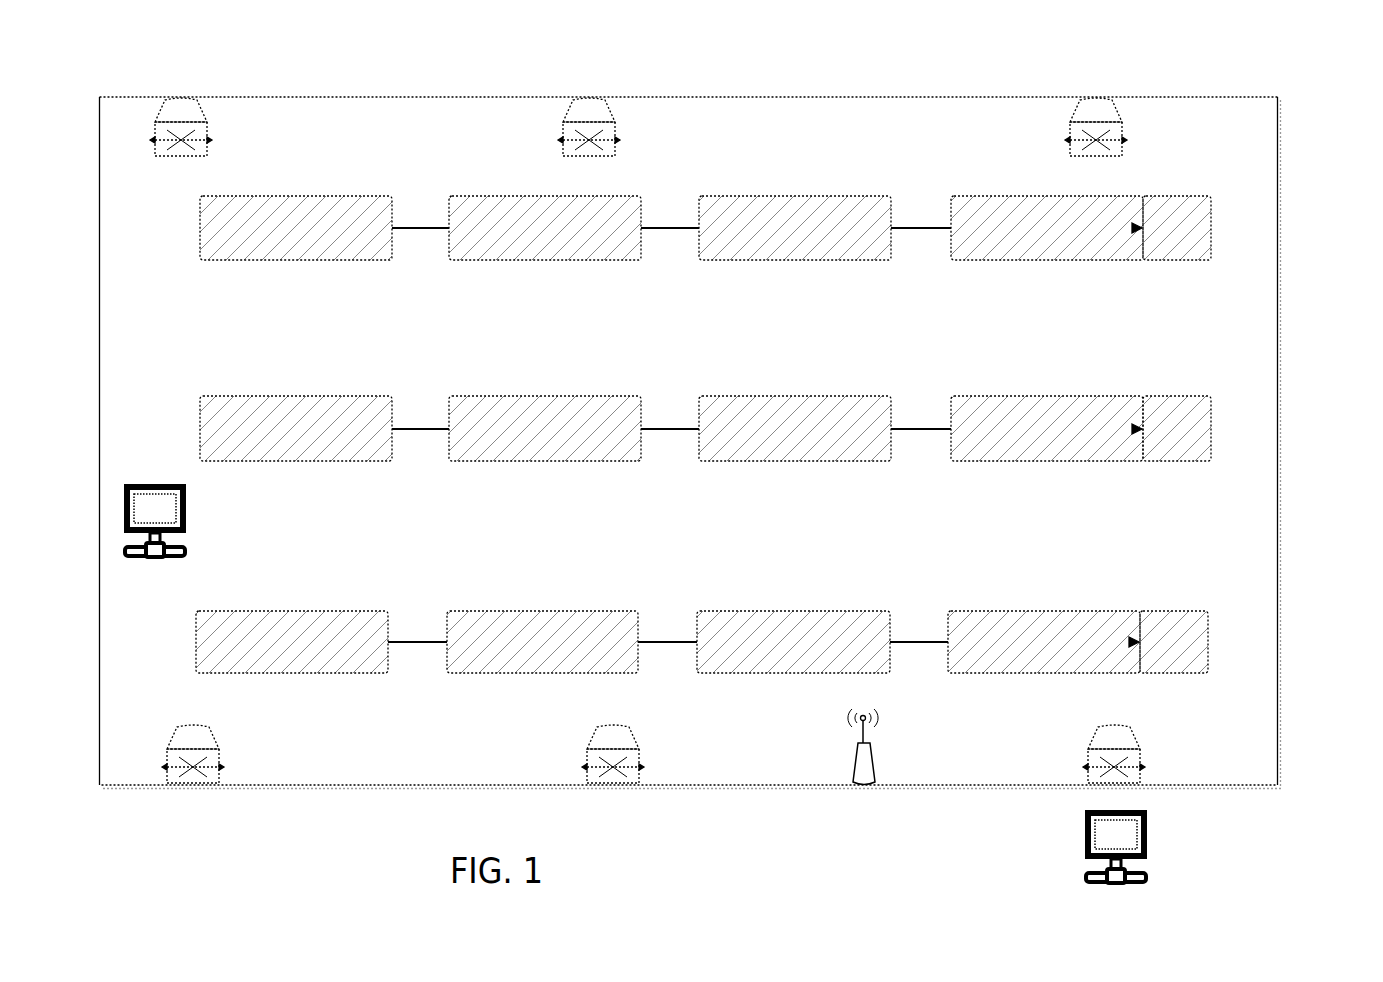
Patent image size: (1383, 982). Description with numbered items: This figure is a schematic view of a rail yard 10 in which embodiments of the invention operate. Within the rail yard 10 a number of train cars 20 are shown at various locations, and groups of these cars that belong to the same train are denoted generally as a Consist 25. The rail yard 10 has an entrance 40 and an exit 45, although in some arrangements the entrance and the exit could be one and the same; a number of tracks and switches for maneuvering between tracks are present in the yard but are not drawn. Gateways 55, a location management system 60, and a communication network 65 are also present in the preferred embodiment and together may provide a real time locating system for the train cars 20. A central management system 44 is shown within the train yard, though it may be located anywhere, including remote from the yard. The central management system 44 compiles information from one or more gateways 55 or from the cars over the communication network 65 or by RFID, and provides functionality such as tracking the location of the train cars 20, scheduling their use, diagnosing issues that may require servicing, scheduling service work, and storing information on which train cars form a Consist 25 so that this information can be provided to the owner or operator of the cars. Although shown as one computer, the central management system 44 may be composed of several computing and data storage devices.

The rail yard 10 is at (690, 92).
The train cars 20 is at (575, 228).
The Consist 25 is at (1081, 228).
The entrance 40 is at (97, 436).
The central management system 44 is at (1132, 848).
The exit 45 is at (1281, 434).
The gateways 55 is at (178, 102).
The location management system 60 is at (171, 522).
The communication network 65 is at (874, 743).